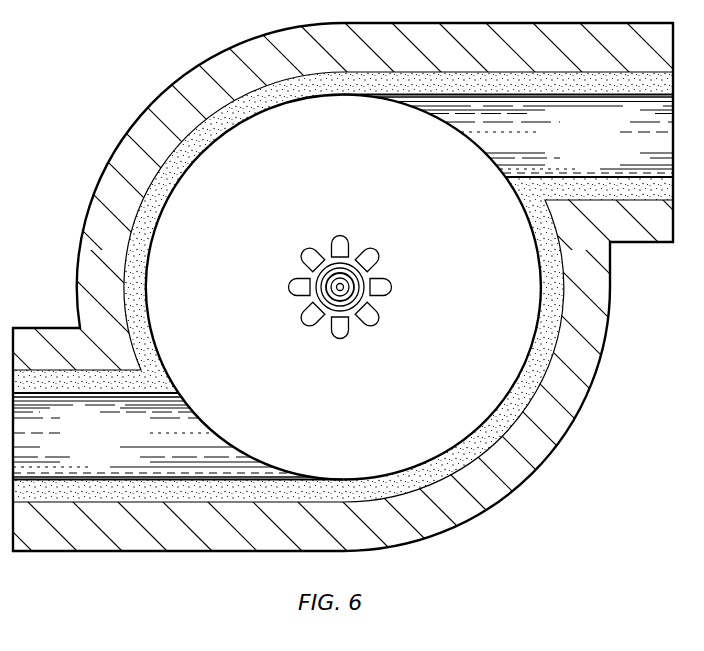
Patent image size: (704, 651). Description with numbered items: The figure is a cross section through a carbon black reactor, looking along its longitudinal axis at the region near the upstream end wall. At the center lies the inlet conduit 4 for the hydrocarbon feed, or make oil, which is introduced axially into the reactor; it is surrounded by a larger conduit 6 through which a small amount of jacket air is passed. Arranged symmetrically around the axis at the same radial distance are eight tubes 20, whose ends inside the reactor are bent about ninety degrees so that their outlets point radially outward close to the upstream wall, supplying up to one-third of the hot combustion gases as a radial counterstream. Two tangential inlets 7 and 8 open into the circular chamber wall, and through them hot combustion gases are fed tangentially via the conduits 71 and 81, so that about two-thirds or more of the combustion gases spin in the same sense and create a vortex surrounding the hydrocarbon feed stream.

The inlet conduit 4 is at (350, 281).
The larger conduit 6 is at (318, 279).
The tubes 20 is at (341, 243).
The tangential inlet 8 is at (467, 140).
The tangential inlet 7 is at (208, 423).
The conduit 81 is at (591, 145).
The conduit 71 is at (145, 446).